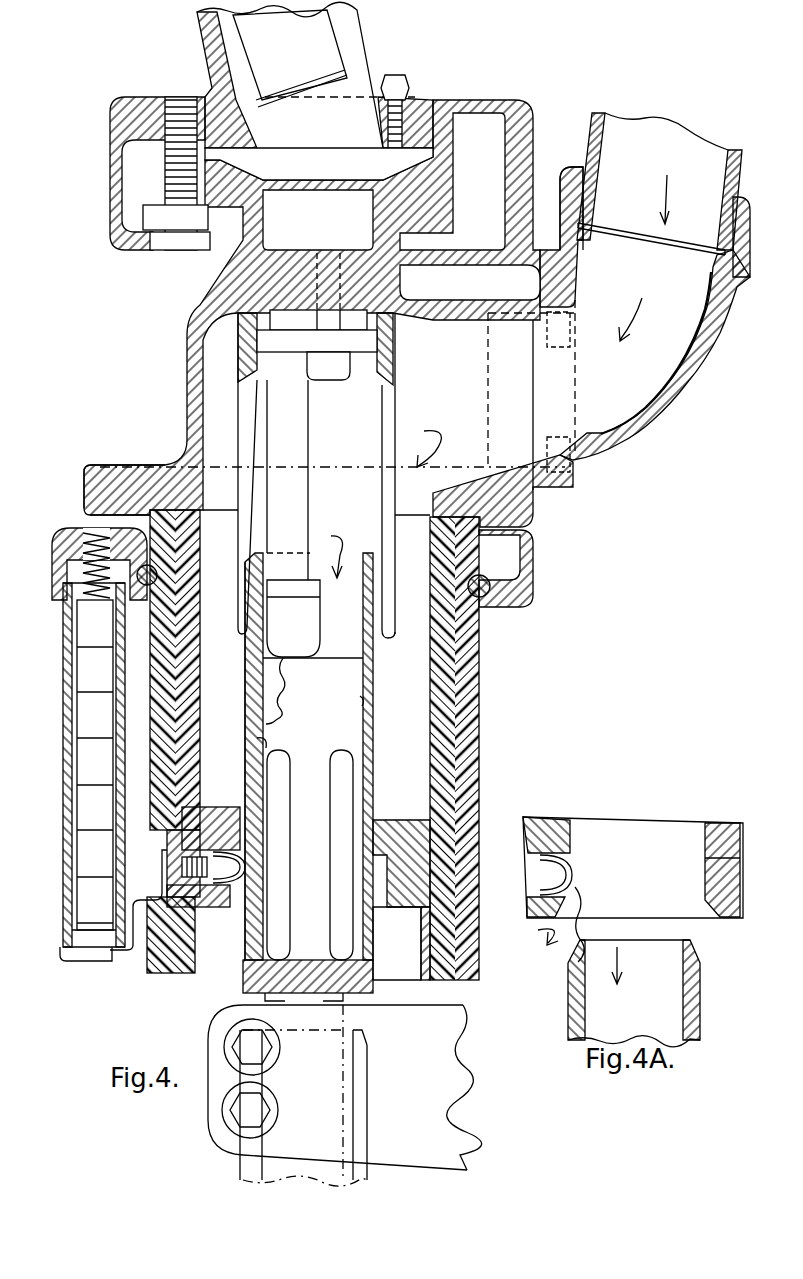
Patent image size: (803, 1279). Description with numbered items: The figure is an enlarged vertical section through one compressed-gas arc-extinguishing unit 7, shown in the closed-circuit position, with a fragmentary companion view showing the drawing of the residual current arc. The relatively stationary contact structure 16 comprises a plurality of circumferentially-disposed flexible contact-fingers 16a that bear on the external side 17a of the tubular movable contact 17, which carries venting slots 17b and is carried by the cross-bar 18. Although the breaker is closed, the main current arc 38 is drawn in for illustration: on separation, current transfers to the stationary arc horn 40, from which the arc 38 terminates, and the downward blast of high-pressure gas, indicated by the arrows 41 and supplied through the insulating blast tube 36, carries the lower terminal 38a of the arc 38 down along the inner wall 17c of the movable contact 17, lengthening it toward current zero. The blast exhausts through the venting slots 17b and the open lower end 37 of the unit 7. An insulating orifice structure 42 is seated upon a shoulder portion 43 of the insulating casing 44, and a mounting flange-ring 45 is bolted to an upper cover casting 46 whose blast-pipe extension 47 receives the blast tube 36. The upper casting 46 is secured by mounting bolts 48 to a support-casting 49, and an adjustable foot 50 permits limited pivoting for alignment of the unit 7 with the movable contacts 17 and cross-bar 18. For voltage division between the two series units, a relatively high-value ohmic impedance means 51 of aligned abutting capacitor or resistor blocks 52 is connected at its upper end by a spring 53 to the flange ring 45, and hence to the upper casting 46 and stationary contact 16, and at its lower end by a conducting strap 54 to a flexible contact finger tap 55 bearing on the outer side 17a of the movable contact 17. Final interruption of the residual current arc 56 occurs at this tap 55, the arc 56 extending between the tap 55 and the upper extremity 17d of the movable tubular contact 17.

In FIG. 4, the arc-extinguishing unit 7 is at (65, 498).
In FIG. 4, the stationary contact structure 16 is at (395, 396).
In FIG. 4, the flexible contact-fingers 16a is at (237, 566).
In FIG. 4, the movable tubular contact 17 is at (375, 681).
In FIG. 4, the external side of movable contact 17a is at (246, 680).
In FIG. 4, the venting slots 17b is at (328, 821).
In FIG. 4, the inner wall of movable contact 17c is at (260, 750).
In FIG. 4A, the upper extremity of movable tubular contact 17d is at (678, 938).
In FIG. 4, the cross-bar 18 is at (406, 1166).
In FIG. 4, the insulating blast tube 36 is at (738, 180).
In FIG. 4, the open lower end of unit 37 is at (198, 972).
In FIG. 4, the main current arc 38 is at (285, 676).
In FIG. 4, the lower terminal of arc 38a is at (273, 721).
In FIG. 4, the stationary arc horn 40 is at (320, 631).
In FIG. 4, the arrows indicating gas blast 41 is at (377, 496).
In FIG. 4A, the arrows indicating gas blast 41 is at (638, 963).
In FIG. 4, the insulating orifice structure 42 is at (413, 907).
In FIG. 4, the shoulder portion 43 is at (430, 922).
In FIG. 4, the insulating casing 44 is at (480, 711).
In FIG. 4, the mounting flange-ring 45 is at (534, 582).
In FIG. 4, the upper cover casting 46 is at (190, 328).
In FIG. 4, the blast-pipe extension 47 is at (740, 272).
In FIG. 4, the mounting bolts 48 is at (178, 252).
In FIG. 4, the support-casting 49 is at (203, 37).
In FIG. 4, the adjustable foot 50 is at (262, 165).
In FIG. 4, the ohmic impedance means 51 is at (82, 670).
In FIG. 4, the capacitor or resistor blocks 52 is at (87, 625).
In FIG. 4, the spring 53 is at (87, 571).
In FIG. 4, the conducting strap 54 is at (118, 952).
In FIG. 4, the flexible contact finger tap 55 is at (247, 860).
In FIG. 4A, the flexible contact finger tap 55 is at (572, 861).
In FIG. 4A, the residual current arc 56 is at (573, 893).